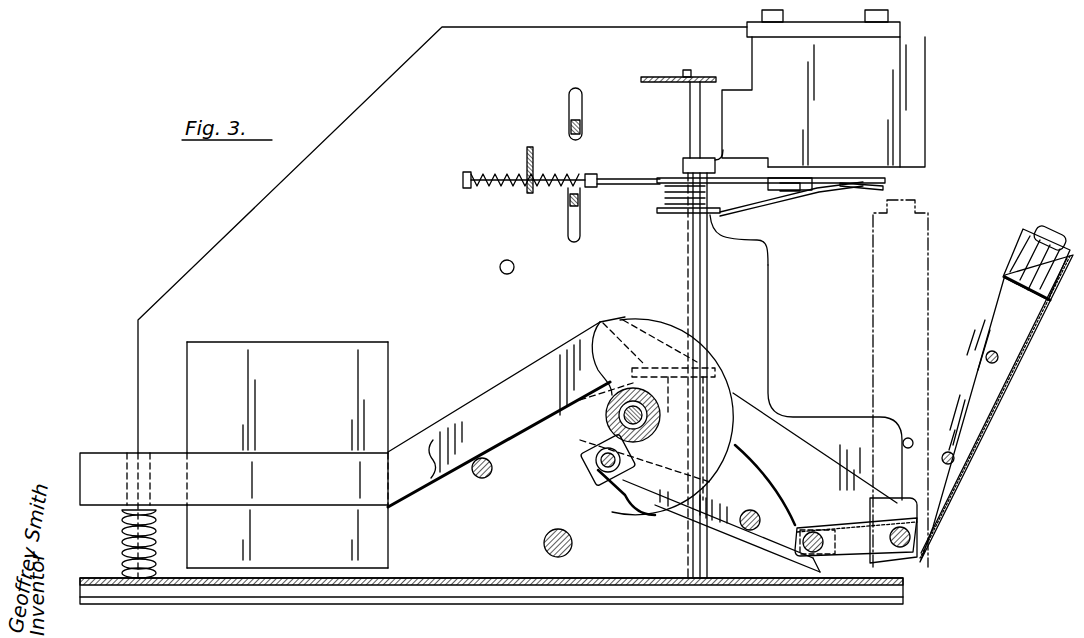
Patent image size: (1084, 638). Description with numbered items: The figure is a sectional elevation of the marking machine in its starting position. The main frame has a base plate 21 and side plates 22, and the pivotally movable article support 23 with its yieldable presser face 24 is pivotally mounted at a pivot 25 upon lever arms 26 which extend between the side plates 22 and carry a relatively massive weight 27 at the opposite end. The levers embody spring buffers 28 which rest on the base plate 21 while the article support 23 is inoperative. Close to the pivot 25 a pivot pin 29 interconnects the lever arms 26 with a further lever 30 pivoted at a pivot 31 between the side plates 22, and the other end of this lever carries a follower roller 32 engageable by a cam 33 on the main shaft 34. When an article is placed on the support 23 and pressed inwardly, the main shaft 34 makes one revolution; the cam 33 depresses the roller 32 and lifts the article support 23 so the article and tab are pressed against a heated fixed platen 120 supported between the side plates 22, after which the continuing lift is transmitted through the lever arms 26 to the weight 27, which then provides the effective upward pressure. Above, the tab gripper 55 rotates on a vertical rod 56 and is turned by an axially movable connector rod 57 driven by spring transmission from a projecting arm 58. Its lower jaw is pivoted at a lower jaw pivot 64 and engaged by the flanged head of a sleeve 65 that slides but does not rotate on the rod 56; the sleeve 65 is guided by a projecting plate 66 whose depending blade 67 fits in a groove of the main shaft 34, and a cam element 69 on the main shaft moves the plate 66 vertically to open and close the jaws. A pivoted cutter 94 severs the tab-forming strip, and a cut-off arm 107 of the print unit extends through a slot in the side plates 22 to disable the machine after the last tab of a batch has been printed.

The base plate 21 is at (610, 588).
The side plates 22 is at (412, 72).
The article support 23 is at (987, 397).
The yieldable presser face 24 is at (1045, 237).
The pivot 25 is at (912, 535).
The lever arms 26 is at (793, 443).
The weight 27 is at (300, 350).
The spring buffers 28 is at (122, 540).
The pivot pin 29 is at (805, 530).
The further lever 30 is at (713, 532).
The pivot 31 is at (750, 532).
The follower roller 32 is at (598, 466).
The cam 33 is at (628, 333).
The main shaft 34 is at (622, 421).
The gripper 55 is at (892, 183).
The vertical rod 56 is at (688, 135).
The connector rod 57 is at (617, 190).
The projecting arm 58 is at (528, 148).
The lower jaw pivot 64 is at (812, 184).
The sleeve 65 is at (707, 270).
The projecting plate 66 is at (604, 314).
The depending blade 67 is at (668, 423).
The cam element 69 is at (614, 415).
The pivoted cutter 94 is at (570, 205).
The cut-off arm 107 is at (582, 128).
The heated fixed platen 120 is at (902, 97).